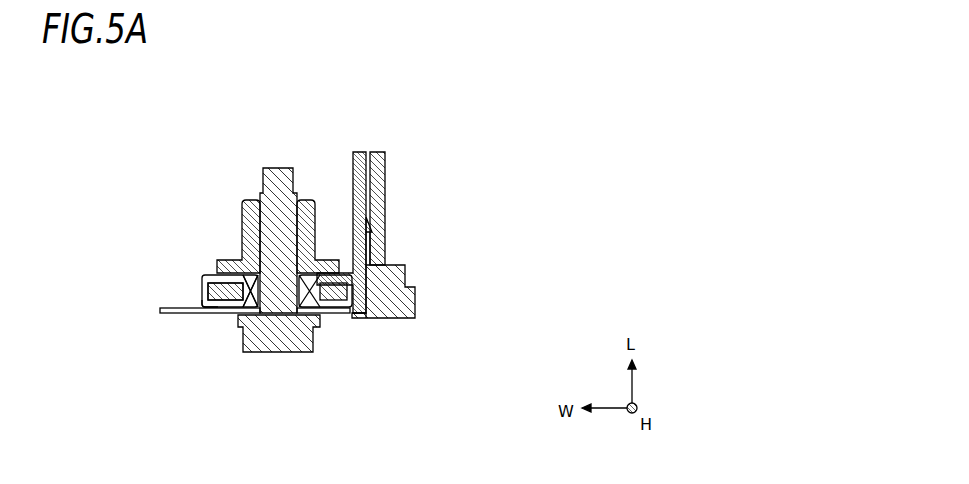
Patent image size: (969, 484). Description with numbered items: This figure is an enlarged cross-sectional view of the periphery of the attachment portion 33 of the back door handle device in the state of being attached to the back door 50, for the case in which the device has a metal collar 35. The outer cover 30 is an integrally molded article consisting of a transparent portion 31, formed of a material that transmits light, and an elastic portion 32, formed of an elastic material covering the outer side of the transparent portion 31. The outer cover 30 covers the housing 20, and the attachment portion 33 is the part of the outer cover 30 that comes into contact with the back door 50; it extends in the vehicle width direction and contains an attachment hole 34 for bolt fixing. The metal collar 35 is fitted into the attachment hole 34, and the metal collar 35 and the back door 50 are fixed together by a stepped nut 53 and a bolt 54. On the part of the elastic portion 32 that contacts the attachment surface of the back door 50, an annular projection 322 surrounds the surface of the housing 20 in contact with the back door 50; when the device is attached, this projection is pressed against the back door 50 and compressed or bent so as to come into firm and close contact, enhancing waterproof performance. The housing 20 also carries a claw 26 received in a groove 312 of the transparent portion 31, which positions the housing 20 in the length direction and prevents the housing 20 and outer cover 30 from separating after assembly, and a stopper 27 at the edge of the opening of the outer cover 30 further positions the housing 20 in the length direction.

The housing 20 is at (403, 322).
The claw 26 is at (369, 232).
The stopper 27 is at (363, 318).
The outer cover 30 is at (581, 228).
The transparent portion 31 is at (364, 170).
The elastic portion 32 is at (378, 192).
The groove 312 is at (366, 230).
The annular projection 322 is at (215, 313).
The attachment portion 33 is at (214, 275).
The attachment hole 34 is at (207, 291).
The metal collar 35 is at (250, 353).
The back door 50 is at (167, 317).
The stepped nut 53 is at (247, 218).
The bolt 54 is at (280, 352).